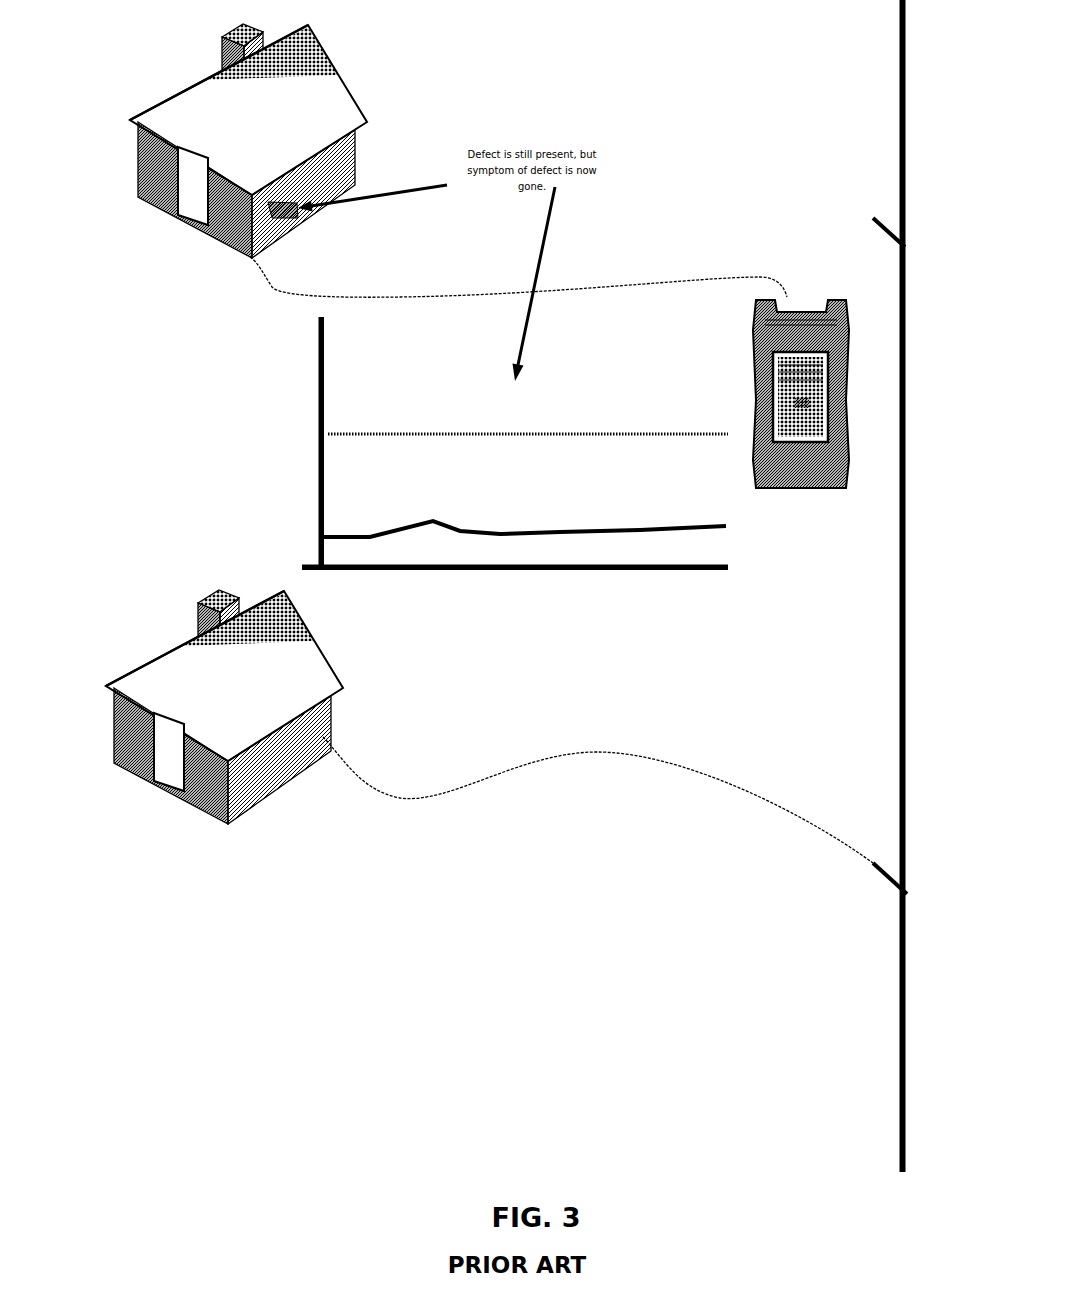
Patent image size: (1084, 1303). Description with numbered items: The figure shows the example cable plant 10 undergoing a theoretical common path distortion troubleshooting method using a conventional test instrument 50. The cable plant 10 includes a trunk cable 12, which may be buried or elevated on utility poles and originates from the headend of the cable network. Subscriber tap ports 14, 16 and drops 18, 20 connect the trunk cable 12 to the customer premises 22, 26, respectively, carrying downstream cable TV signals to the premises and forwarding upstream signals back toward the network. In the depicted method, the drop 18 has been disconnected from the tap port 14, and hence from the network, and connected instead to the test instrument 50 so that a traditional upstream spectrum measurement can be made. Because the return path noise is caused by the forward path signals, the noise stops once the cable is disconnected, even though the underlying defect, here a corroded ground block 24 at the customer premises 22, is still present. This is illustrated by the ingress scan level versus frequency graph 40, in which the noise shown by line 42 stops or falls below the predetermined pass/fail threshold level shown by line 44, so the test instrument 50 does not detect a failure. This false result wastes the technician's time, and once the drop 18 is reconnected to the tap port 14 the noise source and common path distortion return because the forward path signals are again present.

The cable plant 10 is at (583, 105).
The trunk cable 12 is at (902, 22).
The subscriber tap port 14 is at (898, 223).
The subscriber tap port 16 is at (873, 865).
The drop 18 is at (263, 277).
The drop 20 is at (580, 753).
The customer premises 22 is at (138, 167).
The corroded ground block 24 is at (282, 213).
The customer premises 26 is at (112, 737).
The ingress scan level versus frequency graph 40 is at (595, 566).
The noise line 42 is at (457, 527).
The pass/fail threshold level line 44 is at (330, 434).
The test instrument 50 is at (798, 487).